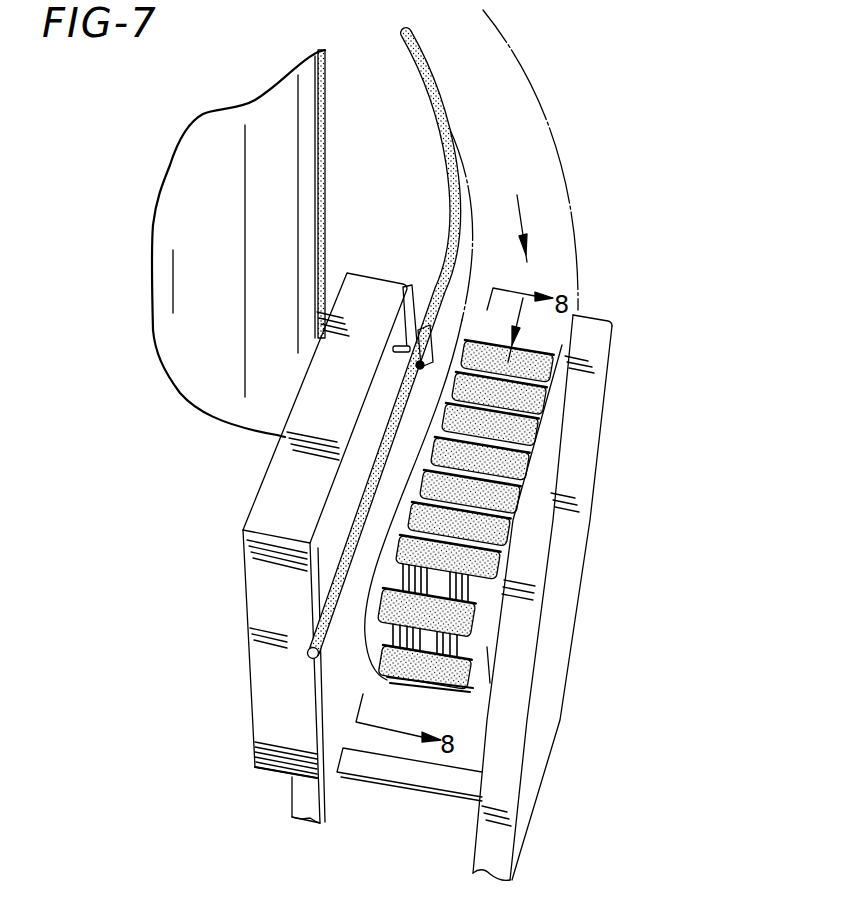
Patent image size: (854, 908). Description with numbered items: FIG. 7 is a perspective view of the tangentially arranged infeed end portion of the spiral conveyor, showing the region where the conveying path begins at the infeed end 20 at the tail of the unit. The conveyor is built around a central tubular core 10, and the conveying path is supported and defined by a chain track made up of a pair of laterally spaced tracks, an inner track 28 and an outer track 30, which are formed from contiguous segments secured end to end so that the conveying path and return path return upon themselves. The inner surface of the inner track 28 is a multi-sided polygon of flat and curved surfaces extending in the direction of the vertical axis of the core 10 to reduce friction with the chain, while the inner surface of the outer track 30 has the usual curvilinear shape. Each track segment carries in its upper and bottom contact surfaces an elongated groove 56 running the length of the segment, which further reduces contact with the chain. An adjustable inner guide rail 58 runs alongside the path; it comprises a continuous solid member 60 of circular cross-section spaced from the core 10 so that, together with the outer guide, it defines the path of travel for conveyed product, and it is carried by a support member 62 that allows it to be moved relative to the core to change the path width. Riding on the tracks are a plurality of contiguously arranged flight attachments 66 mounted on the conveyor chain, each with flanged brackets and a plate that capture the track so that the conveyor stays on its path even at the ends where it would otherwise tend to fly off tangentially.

The core 10 is at (322, 162).
The infeed end 20 is at (580, 510).
The inner track 28 is at (373, 660).
The outer track 30 is at (480, 640).
The groove 56 is at (385, 632).
The adjustable inner guide rail 58 is at (413, 350).
The continuous solid member 60 is at (454, 200).
The support post 62 is at (405, 288).
The flight attachments 66 is at (532, 430).